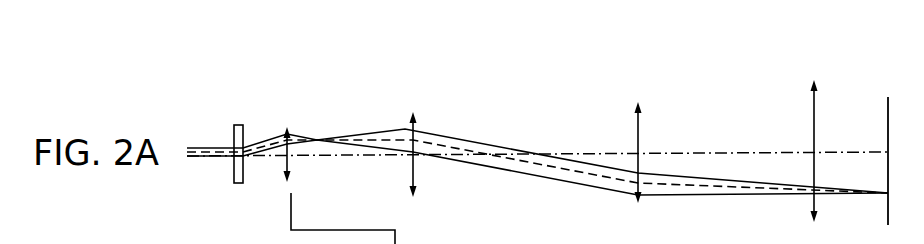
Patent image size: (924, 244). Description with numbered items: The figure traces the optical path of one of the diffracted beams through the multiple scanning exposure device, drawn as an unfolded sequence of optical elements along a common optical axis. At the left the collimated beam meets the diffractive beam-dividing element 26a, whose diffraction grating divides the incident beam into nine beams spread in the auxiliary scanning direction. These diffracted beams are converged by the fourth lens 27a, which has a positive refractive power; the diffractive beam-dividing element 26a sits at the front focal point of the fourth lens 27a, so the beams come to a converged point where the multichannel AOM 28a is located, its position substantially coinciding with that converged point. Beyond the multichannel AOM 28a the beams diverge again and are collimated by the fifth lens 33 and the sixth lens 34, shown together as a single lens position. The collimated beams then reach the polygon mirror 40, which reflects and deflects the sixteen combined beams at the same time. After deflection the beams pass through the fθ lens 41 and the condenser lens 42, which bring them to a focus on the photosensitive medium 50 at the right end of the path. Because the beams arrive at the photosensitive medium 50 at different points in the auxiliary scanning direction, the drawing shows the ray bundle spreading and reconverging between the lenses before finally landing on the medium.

The diffractive beam-dividing element 26a is at (239, 243).
The fourth lens 27a is at (287, 126).
The multichannel AOM 28a is at (335, 170).
The fifth lens 33 is at (411, 130).
The sixth lens 34 is at (413, 110).
The polygon mirror 40 is at (486, 188).
The fθ lens 41 is at (638, 87).
The condenser lens 42 is at (814, 67).
The photosensitive medium 50 is at (888, 95).